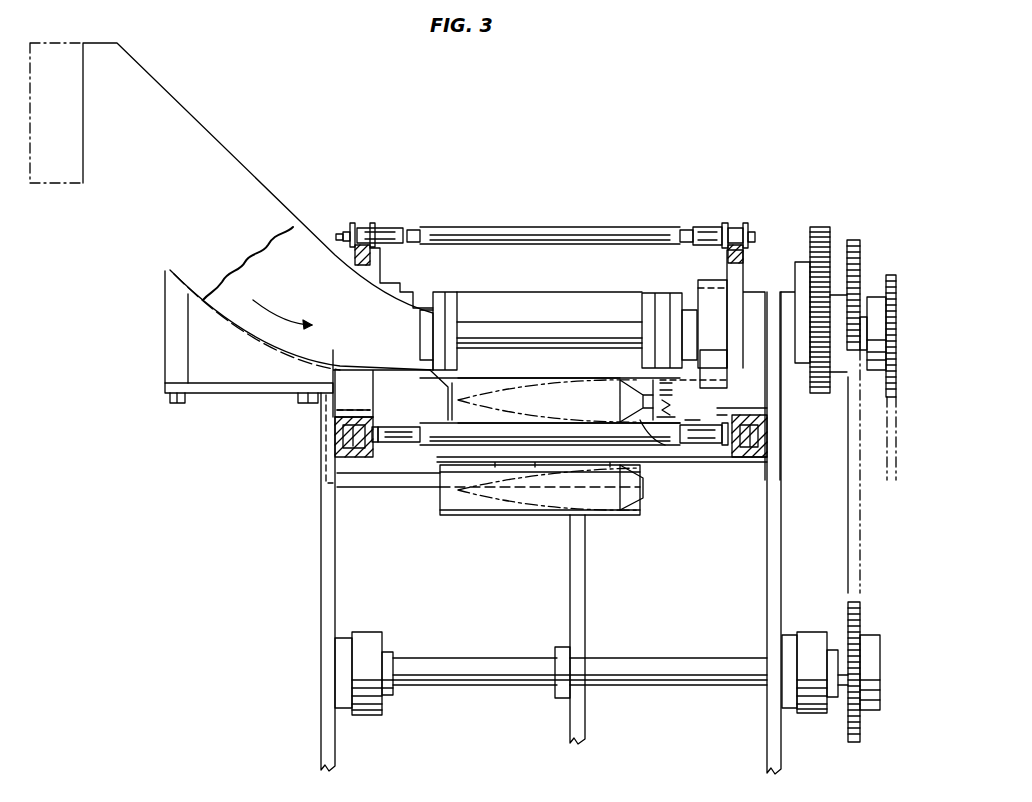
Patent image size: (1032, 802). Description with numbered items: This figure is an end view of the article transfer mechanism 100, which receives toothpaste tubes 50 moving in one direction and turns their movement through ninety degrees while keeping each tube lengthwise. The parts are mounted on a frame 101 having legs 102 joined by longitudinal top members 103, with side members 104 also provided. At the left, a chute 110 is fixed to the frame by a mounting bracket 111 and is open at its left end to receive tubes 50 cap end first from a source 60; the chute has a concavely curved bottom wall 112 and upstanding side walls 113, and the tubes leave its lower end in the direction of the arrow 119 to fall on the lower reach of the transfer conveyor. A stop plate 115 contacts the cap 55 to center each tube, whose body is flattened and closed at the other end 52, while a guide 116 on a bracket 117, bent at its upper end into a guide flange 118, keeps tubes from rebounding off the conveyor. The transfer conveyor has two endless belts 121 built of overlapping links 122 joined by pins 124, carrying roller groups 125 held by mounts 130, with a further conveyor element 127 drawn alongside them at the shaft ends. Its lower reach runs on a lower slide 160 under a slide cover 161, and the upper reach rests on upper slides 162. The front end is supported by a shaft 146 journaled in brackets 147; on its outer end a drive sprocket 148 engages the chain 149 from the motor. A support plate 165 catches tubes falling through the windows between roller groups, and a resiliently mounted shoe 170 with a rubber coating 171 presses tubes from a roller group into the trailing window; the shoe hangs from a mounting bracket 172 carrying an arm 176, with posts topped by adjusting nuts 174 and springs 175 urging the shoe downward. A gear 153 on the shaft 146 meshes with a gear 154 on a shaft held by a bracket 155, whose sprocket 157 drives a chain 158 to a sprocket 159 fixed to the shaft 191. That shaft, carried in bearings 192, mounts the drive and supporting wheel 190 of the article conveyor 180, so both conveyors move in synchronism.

The article transfer mechanism 100 is at (745, 56).
The source 60 is at (60, 42).
The chute 110 is at (210, 118).
The side walls 113 is at (185, 196).
The arrow 119 is at (278, 304).
The mounting bracket 111 is at (165, 330).
The bottom wall 112 is at (257, 340).
The legs 102 is at (321, 580).
The frame 101 is at (288, 665).
The roller groups 125 is at (556, 225).
The shaft end 127 is at (412, 230).
The mounts 130 is at (385, 228).
The endless belts 121 is at (352, 223).
The links 122 is at (344, 232).
The pins 124 is at (340, 234).
The upper slides 162 is at (370, 262).
The brackets 147 is at (440, 300).
The shaft 146 is at (515, 330).
The arm 176 is at (673, 388).
The bracket 117 is at (383, 368).
The guide 116 is at (440, 392).
The guide flange 118 is at (448, 380).
The adjusting nuts 174 is at (640, 380).
The springs 175 is at (676, 405).
The support plate 165 is at (647, 447).
The toothpaste tubes 50 is at (538, 405).
The stop plate 115 is at (660, 458).
The end 52 is at (458, 490).
The cap 55 is at (641, 508).
The article conveyor 180 is at (525, 520).
The lower slide 160 is at (335, 440).
The slide cover 161 is at (343, 430).
The mounting bracket 172 is at (717, 408).
The rubber coating 171 is at (670, 420).
The shoe 170 is at (697, 422).
The top members 103 is at (742, 285).
The bracket 155 is at (790, 280).
The gear 154 is at (826, 228).
The gear 153 is at (822, 296).
The sprocket 157 is at (855, 250).
The drive sprocket 148 is at (897, 300).
The chain 149 is at (896, 436).
The chain 158 is at (860, 525).
The shaft 191 is at (455, 686).
The drive and supporting wheel 190 is at (585, 730).
The bearings 192 is at (370, 710).
The side members 104 is at (342, 704).
The sprocket 159 is at (861, 613).